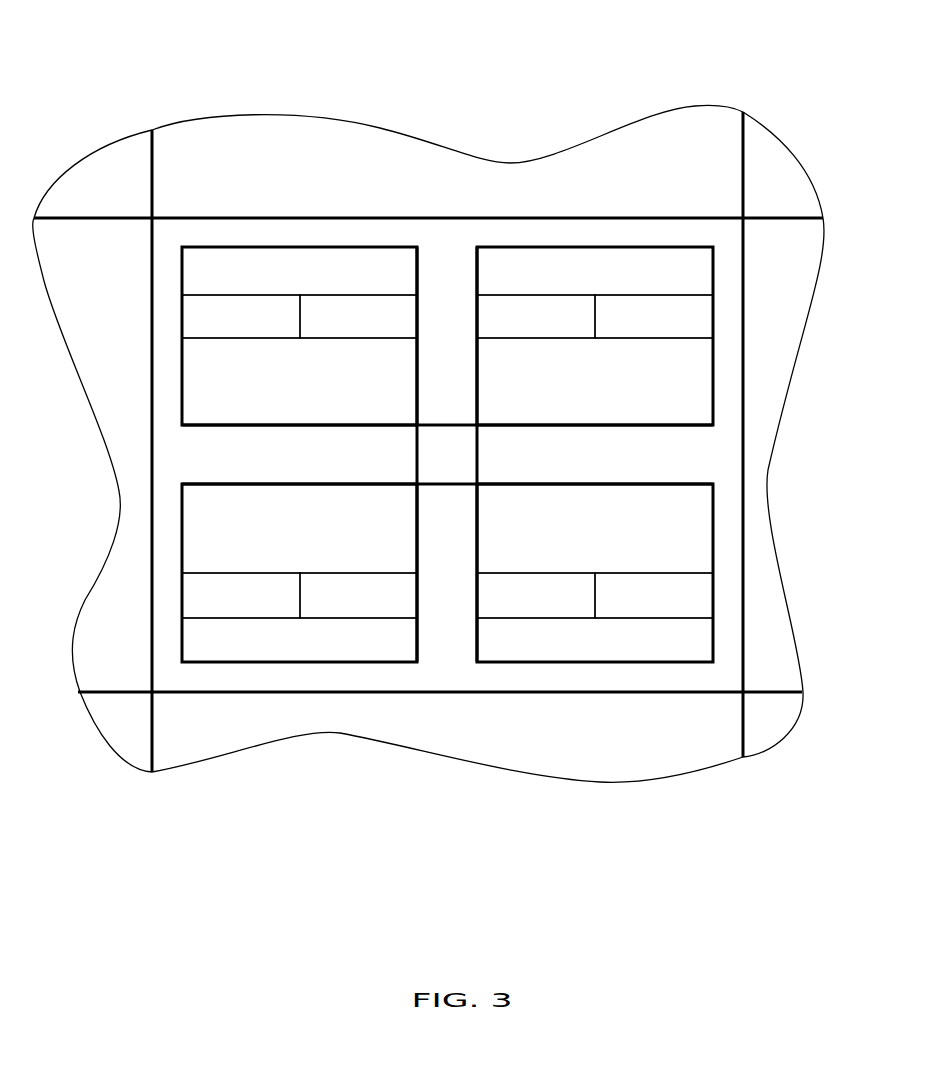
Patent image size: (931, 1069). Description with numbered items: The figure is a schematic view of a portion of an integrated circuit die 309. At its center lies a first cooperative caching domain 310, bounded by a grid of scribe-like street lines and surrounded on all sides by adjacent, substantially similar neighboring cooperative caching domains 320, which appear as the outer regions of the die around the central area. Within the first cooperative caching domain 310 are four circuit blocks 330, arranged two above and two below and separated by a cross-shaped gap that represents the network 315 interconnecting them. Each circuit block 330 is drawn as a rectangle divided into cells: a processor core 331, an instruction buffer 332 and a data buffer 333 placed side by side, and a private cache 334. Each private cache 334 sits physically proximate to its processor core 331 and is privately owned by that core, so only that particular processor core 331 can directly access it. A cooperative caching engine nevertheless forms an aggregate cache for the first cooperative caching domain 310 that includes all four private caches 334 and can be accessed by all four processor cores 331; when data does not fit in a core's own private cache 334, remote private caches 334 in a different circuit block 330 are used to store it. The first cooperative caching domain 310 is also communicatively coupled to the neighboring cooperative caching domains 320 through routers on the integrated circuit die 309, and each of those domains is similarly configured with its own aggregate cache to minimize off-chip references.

The integrated circuit die 309 is at (299, 80).
The first cooperative caching domain 310 is at (345, 217).
The network 315 is at (478, 440).
The neighboring cooperative caching domains 320 is at (87, 199).
The circuit block 330 is at (318, 428).
The processor core 331 is at (447, 454).
The instruction buffer 332 is at (388, 456).
The data buffer 333 is at (506, 456).
The private cache 334 is at (447, 455).